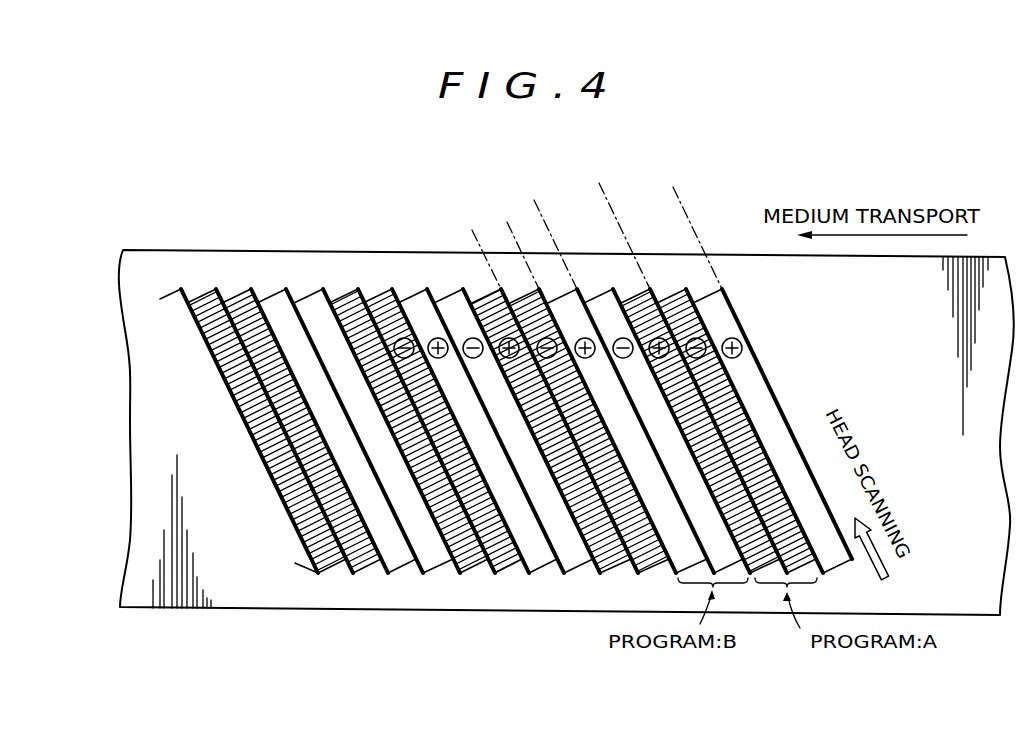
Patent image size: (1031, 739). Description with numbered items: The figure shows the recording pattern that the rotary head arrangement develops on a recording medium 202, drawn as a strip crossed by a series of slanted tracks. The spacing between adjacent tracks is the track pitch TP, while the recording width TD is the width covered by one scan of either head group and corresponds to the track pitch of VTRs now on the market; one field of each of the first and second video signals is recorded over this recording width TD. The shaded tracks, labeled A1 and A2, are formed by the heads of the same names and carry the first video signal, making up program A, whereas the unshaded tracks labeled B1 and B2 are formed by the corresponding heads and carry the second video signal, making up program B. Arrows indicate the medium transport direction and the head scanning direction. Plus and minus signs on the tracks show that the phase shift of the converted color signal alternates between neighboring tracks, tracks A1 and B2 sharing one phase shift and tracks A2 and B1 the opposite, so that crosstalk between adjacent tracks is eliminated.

The recording medium 202 is at (317, 250).
The track pitch TP is at (508, 224).
The recording width TD is at (677, 195).
The track formed by head A1 is at (626, 431).
The track formed by head A2 is at (589, 431).
The track formed by head B1 is at (588, 431).
The track formed by head B2 is at (625, 431).